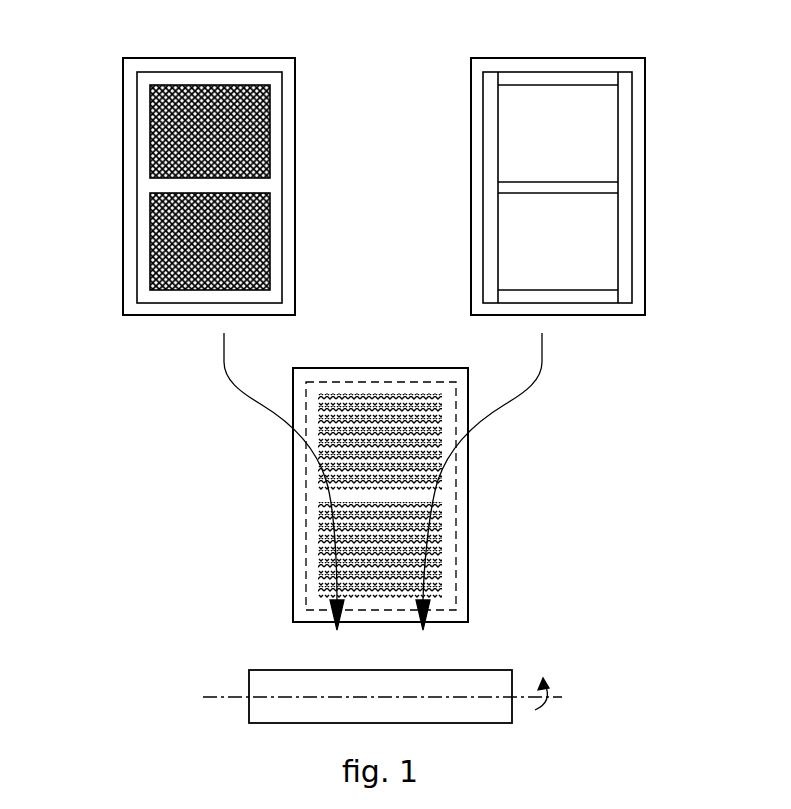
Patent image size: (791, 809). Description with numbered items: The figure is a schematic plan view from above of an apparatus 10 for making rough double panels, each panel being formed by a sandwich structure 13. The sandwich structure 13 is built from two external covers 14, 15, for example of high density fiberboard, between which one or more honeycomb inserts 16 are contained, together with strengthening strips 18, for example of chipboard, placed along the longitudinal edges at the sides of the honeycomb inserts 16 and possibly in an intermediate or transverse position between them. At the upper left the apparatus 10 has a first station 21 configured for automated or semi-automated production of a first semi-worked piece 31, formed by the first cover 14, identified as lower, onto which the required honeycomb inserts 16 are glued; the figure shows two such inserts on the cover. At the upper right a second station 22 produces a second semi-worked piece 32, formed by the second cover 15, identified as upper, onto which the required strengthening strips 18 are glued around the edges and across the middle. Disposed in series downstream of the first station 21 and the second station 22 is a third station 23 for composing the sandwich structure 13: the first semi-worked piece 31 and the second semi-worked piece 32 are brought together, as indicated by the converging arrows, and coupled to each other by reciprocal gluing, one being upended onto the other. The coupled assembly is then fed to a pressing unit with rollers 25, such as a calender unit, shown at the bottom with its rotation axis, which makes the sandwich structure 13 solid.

The apparatus 10 is at (78, 608).
The sandwich structure 13 is at (224, 481).
The first cover 14 is at (278, 102).
The second cover 15 is at (518, 232).
The honeycomb insert 16 is at (155, 117).
The strengthening strip 18 is at (587, 78).
The first station 21 is at (116, 314).
The second station 22 is at (651, 281).
The third station 23 is at (598, 554).
The pressing unit with rollers 25 is at (482, 713).
The first semi-worked piece 31 is at (293, 204).
The second semi-worked piece 32 is at (641, 105).